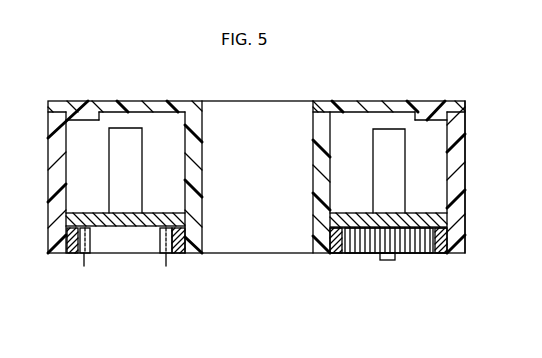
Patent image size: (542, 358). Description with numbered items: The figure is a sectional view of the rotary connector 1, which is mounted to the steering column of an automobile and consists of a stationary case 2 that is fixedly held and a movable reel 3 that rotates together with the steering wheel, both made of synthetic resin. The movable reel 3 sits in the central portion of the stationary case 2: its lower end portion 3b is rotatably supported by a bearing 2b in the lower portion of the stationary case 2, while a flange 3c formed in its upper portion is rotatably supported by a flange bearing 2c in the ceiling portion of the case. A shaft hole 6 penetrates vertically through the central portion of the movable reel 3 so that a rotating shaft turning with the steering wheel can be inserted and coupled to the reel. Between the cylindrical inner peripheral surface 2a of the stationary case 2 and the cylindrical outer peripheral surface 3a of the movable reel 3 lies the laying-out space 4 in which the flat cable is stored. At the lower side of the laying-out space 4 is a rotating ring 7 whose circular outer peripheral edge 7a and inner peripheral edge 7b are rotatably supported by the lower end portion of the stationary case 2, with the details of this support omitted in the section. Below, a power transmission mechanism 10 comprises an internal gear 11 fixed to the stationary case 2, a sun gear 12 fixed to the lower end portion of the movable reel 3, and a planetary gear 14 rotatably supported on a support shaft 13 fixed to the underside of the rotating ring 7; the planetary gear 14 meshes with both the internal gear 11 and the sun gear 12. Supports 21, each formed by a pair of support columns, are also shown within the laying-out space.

The rotary connector 1 is at (437, 83).
The stationary case 2 is at (465, 187).
The cylindrical inner peripheral surface 2a is at (438, 167).
The bearing 2b is at (186, 253).
The flange bearing 2c is at (78, 100).
The movable reel 3 is at (325, 105).
The cylindrical outer peripheral surface 3a is at (334, 175).
The lower end portion 3b is at (200, 254).
The flange 3c is at (145, 103).
The laying-out space 4 is at (360, 133).
The shaft hole 6 is at (202, 152).
The rotating ring 7 is at (124, 222).
The outer peripheral edge 7a is at (66, 215).
The inner peripheral edge 7b is at (186, 227).
The power transmission mechanism 10 is at (420, 267).
The internal gear 11 is at (448, 254).
The sun gear 12 is at (337, 254).
The support shaft 13 is at (388, 261).
The planetary gear 14 is at (367, 254).
The support 21 is at (115, 168).